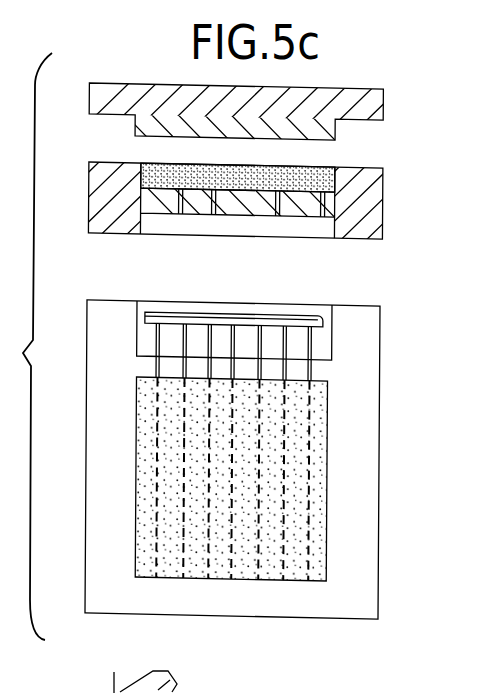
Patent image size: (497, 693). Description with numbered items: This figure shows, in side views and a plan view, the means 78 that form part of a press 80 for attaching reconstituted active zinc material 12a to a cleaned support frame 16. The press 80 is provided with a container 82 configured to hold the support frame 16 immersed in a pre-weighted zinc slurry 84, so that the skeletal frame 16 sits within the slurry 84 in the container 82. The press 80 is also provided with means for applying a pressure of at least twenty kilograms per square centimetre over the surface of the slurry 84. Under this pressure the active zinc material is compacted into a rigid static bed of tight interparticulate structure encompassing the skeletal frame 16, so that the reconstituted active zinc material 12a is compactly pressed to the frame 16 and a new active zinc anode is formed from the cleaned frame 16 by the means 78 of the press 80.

The press 80 is at (383, 107).
The container 82 is at (371, 214).
The zinc slurry 84 is at (321, 168).
The means for attaching reconstituted active zinc material to a cleaned support fram 78 is at (432, 303).
The support frame 16 is at (277, 314).
The reconstituted active zinc material 12a is at (138, 425).